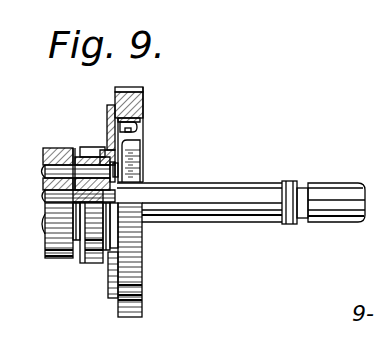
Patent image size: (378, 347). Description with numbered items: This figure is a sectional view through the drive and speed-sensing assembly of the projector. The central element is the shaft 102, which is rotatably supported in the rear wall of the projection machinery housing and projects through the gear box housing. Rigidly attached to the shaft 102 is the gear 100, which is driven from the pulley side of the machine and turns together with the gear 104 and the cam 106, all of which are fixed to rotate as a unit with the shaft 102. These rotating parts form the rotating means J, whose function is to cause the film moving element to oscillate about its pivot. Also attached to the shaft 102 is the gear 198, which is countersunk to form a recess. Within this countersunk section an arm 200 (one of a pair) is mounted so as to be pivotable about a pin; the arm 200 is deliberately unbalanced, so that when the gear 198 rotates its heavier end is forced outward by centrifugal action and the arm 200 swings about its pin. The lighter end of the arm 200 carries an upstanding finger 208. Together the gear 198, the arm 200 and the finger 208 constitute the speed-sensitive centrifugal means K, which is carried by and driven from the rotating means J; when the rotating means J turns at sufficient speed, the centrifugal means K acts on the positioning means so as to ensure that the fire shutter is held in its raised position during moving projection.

The shaft 102 is at (213, 191).
The gear 100 is at (143, 292).
The gear 104 is at (93, 263).
The cam 106 is at (58, 258).
The rotating means J is at (53, 146).
The arm 200 is at (110, 148).
The gear 198 is at (140, 123).
The speed-sensitive centrifugal means K is at (144, 136).
The upstanding finger 208 is at (126, 145).